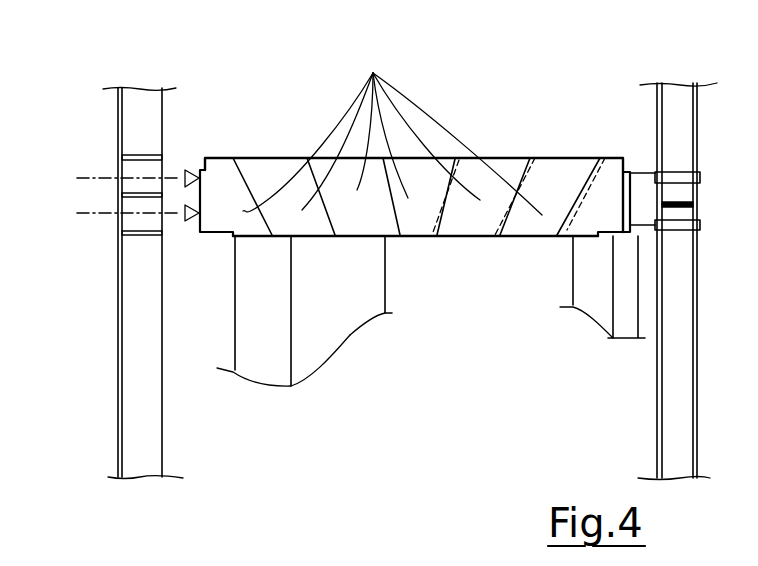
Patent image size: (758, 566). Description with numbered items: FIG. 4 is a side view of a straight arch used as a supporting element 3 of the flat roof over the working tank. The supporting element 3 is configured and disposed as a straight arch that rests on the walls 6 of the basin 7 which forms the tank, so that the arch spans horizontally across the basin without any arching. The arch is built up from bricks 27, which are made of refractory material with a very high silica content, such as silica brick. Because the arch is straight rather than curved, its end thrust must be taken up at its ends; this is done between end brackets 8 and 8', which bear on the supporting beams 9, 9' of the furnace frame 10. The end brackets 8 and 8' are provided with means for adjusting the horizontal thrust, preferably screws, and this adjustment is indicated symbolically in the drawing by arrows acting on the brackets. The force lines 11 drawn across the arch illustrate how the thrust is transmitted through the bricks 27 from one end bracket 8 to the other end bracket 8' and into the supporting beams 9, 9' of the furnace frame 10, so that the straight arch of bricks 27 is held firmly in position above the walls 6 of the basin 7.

The supporting element 3 is at (515, 146).
The wall 6 is at (250, 250).
The basin 7 is at (418, 312).
The end bracket 8 is at (230, 170).
The end bracket 8' is at (605, 168).
The supporting beam 9 is at (114, 177).
The supporting beam 9' is at (688, 178).
The furnace frame 10 is at (161, 74).
The force lines 11 is at (98, 178).
The brick 27 is at (392, 131).